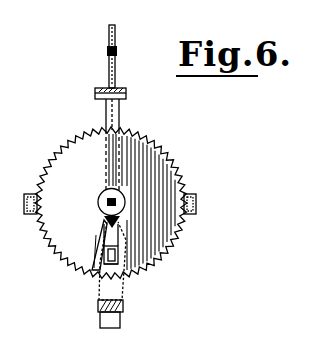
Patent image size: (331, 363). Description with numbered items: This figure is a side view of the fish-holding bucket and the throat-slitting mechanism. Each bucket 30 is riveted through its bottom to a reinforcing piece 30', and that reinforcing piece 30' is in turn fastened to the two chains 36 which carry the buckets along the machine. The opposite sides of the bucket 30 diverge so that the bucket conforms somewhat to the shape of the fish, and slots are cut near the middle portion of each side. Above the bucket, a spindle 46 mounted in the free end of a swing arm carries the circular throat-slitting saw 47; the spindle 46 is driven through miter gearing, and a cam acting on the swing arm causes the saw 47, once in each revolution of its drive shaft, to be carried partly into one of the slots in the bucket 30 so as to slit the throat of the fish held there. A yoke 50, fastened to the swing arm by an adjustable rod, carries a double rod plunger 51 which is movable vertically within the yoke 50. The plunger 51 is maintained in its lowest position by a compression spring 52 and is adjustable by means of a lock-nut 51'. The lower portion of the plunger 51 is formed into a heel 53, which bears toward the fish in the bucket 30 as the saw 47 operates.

The bucket 30 is at (129, 258).
The reinforcing piece 30' is at (130, 312).
The chains 36 is at (112, 328).
The spindle 46 is at (98, 203).
The circular throat-slitting saw 47 is at (155, 150).
The yoke 50 is at (96, 92).
The double rod plunger 51 is at (132, 56).
The lock-nut 51' is at (132, 44).
The compression spring 52 is at (122, 121).
The heel 53 is at (97, 280).